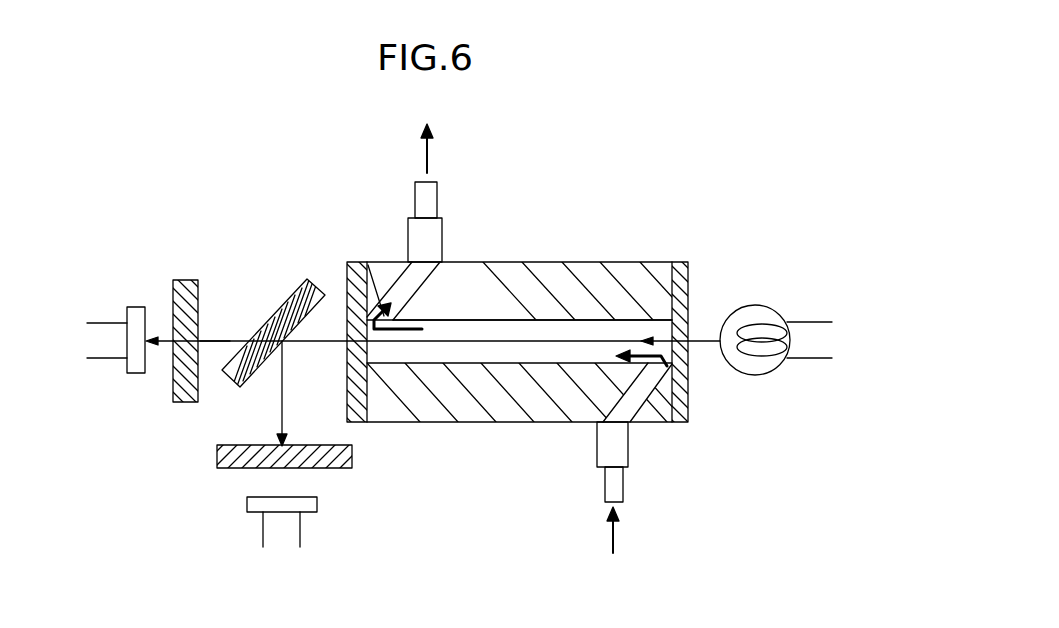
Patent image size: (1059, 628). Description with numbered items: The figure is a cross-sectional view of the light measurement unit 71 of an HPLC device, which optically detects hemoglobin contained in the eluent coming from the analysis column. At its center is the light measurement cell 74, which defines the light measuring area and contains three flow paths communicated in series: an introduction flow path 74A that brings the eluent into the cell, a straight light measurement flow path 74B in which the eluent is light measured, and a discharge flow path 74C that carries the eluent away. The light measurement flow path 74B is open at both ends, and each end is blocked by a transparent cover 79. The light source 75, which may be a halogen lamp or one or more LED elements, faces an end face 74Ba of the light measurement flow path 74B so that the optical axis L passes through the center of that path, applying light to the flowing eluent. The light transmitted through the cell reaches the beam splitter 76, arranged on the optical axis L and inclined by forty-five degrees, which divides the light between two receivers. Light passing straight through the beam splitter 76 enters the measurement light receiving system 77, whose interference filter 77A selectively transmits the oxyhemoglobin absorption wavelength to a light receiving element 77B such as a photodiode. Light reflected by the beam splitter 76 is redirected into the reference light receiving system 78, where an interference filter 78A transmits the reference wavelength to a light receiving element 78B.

The light measurement unit 71 is at (310, 226).
The light measurement cell 74 is at (551, 338).
The introduction flow path 74A is at (657, 420).
The light measurement flow path 74B is at (543, 355).
The end face 74Ba is at (692, 312).
The discharge flow path 74C is at (407, 287).
The light source 75 is at (773, 305).
The beam splitter 76 is at (288, 295).
The measurement light receiving system 77 is at (148, 297).
The interference filter 77A is at (187, 280).
The light receiving element 77B is at (116, 298).
The reference light receiving system 78 is at (234, 494).
The interference filter 78A is at (217, 453).
The light receiving element 78B is at (252, 503).
The transparent cover 79 is at (347, 383).
The optical axis L is at (215, 338).